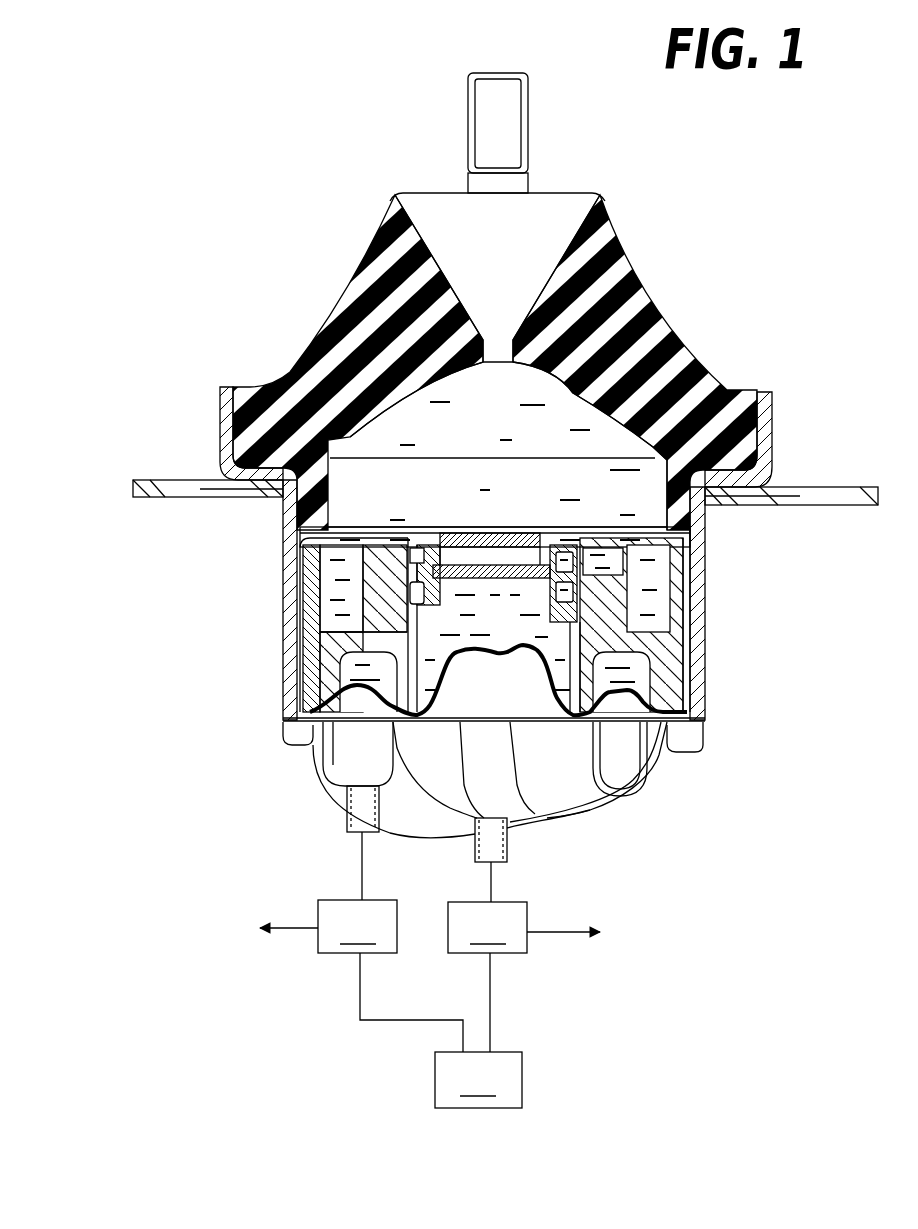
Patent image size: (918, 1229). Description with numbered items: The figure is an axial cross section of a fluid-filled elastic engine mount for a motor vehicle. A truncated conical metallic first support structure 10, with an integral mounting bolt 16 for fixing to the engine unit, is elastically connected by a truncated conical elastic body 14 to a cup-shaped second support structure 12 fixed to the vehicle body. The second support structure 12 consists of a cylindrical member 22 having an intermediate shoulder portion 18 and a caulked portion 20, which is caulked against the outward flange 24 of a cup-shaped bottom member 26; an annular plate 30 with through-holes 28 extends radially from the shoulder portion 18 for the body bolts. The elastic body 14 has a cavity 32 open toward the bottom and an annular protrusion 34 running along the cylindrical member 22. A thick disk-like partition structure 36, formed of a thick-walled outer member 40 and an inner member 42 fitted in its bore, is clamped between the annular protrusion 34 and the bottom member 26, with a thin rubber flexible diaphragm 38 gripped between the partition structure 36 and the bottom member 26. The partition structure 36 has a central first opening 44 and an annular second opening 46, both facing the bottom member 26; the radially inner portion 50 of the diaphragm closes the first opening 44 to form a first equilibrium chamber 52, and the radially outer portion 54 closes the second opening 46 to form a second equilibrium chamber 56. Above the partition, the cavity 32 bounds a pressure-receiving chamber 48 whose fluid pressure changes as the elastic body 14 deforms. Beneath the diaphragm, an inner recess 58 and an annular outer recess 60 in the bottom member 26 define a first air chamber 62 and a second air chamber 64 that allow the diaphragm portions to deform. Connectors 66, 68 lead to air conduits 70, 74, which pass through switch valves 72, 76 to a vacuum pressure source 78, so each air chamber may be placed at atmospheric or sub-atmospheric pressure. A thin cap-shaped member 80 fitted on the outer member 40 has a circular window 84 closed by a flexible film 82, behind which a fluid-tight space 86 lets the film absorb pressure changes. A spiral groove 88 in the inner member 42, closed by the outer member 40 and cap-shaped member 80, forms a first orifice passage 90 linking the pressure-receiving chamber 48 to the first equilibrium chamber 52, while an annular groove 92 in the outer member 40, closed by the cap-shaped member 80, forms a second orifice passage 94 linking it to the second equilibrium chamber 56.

The first rigid support structure 10 is at (568, 184).
The second rigid support structure 12 is at (817, 404).
The elastic body 14 is at (340, 313).
The mounting bolt 16 is at (502, 95).
The shoulder portion 18 is at (256, 497).
The caulked portion 20 is at (687, 752).
The cylindrical member 22 is at (714, 632).
The outward flange 24 is at (300, 727).
The bottom member 26 is at (634, 820).
The through-holes 28 is at (150, 483).
The annular plate 30 is at (787, 490).
The cavity 32 is at (520, 390).
The annular protrusion 34 is at (690, 522).
The partition structure 36 is at (393, 510).
The flexible diaphragm 38 is at (548, 680).
The outer member 40 is at (312, 592).
The inner member 42 is at (580, 605).
The first opening 44 is at (418, 637).
The second opening 46 is at (632, 690).
The pressure-receiving chamber 48 is at (600, 265).
The radially inner portion of the diaphragm 50 is at (460, 797).
The first variable-volume equilibrium chamber 52 is at (540, 820).
The radially outer portion of the diaphragm 54 is at (628, 748).
The second variable-volume equilibrium chamber 56 is at (350, 676).
The inner recess 58 is at (546, 808).
The annular outer recess 60 is at (345, 750).
The first air chamber 62 is at (470, 818).
The second air chamber 64 is at (360, 757).
The connector 66 is at (510, 857).
The connector 68 is at (346, 822).
The air conduit 70 is at (498, 986).
The switch valve 72 is at (619, 907).
The air conduit 74 is at (354, 991).
The switch valve 76 is at (238, 892).
The vacuum pressure source 78 is at (478, 1080).
The cap-shaped member 80 is at (692, 562).
The flexible film 82 is at (460, 532).
The circular window 84 is at (545, 530).
The fluid-tight space 86 is at (512, 560).
The spiral groove 88 is at (440, 527).
The first orifice passage 90 is at (338, 552).
The annular groove 92 is at (670, 578).
The second orifice passage 94 is at (335, 582).